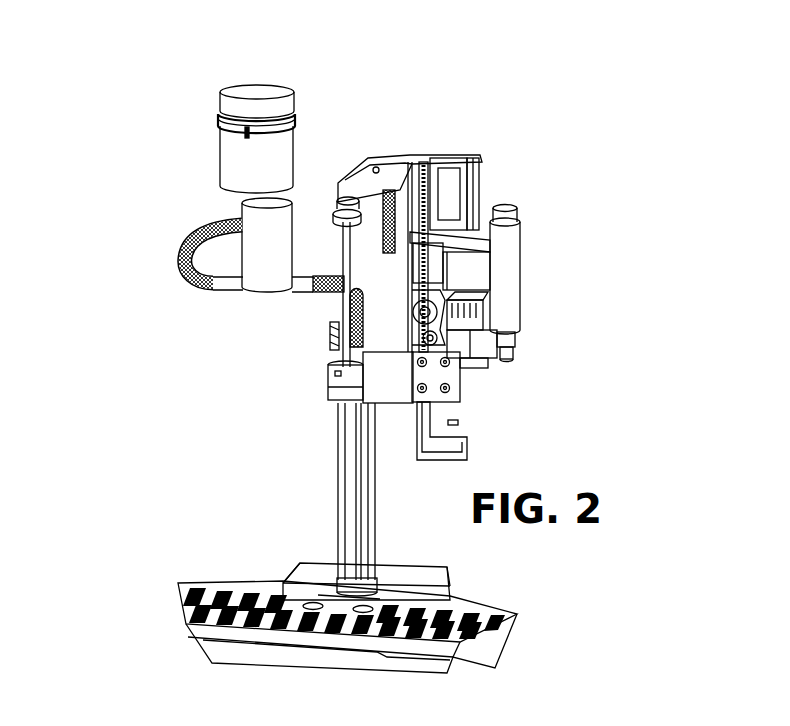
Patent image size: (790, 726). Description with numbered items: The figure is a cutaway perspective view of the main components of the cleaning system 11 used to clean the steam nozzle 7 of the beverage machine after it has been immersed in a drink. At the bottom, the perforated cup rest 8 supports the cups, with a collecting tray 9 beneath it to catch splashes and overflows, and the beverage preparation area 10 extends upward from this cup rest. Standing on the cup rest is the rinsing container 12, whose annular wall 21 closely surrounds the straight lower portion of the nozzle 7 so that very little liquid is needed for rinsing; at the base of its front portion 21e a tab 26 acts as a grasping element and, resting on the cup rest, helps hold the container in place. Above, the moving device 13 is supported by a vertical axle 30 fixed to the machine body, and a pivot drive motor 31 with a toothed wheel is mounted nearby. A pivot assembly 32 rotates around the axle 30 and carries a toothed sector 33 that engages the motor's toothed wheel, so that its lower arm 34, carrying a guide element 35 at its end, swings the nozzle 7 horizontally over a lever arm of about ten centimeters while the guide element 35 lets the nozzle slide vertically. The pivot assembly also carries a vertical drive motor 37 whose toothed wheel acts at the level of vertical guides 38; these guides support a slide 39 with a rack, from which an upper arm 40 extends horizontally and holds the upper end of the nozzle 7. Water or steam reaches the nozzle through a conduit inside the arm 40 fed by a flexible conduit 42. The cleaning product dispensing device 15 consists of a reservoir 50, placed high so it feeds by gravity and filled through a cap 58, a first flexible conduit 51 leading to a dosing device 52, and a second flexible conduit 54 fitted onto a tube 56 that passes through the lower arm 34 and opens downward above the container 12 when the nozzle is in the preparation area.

The steam nozzle 7 is at (347, 297).
The cup rest 8 is at (480, 612).
The collecting tray 9 is at (497, 647).
The beverage preparation area 10 is at (283, 567).
The cleaning system 11 is at (207, 421).
The rinsing container 12 is at (338, 464).
The moving device 13 is at (530, 155).
The cleaning product dispensing device 15 is at (160, 238).
The annular wall 21 is at (373, 512).
The front portion of the wall 21e is at (352, 540).
The tab 26 is at (373, 582).
The vertical axle 30 is at (504, 333).
The pivot drive motor 31 is at (482, 343).
The pivot assembly 32 is at (470, 270).
The toothed sector 33 is at (457, 311).
The lower arm 34 is at (383, 382).
The guide element 35 is at (328, 385).
The vertical drive motor 37 is at (455, 298).
The vertical guides 38 is at (416, 163).
The slide 39 is at (458, 162).
The upper arm 40 is at (373, 185).
The flexible conduit 42 is at (388, 252).
The reservoir 50 is at (238, 148).
The first flexible conduit 51 is at (187, 277).
The dosing device 52 is at (262, 225).
The second flexible conduit 54 is at (328, 276).
The tube 56 is at (333, 348).
The cap 58 is at (262, 92).